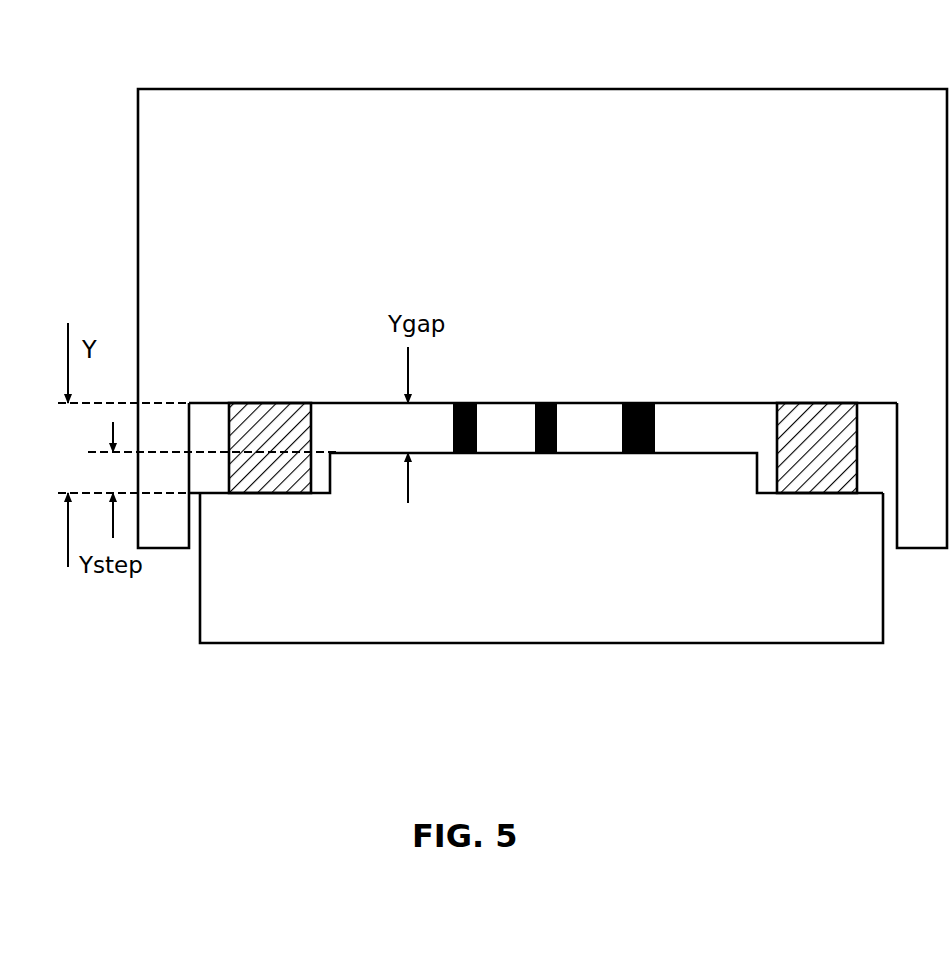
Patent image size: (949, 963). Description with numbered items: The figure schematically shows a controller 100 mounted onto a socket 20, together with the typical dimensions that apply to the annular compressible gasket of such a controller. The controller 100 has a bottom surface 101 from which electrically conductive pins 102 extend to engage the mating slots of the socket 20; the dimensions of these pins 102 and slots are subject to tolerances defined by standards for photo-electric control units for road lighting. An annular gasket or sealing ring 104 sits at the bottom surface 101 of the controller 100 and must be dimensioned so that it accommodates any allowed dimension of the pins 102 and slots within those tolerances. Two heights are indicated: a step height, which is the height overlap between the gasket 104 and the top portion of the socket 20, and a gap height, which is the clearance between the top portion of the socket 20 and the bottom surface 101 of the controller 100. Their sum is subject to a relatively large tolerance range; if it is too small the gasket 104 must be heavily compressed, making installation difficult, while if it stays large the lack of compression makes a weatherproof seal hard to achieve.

The controller 100 is at (372, 89).
The bottom surface 101 is at (713, 403).
The electrically conductive pins 102 is at (647, 455).
The gasket 104 is at (273, 493).
The socket 20 is at (512, 645).